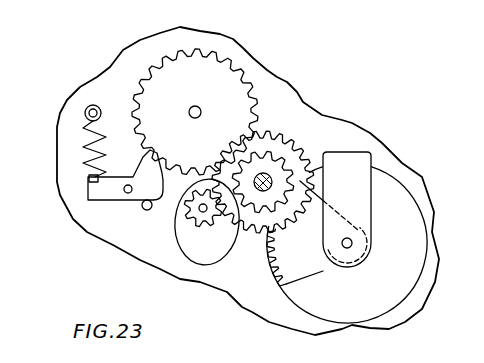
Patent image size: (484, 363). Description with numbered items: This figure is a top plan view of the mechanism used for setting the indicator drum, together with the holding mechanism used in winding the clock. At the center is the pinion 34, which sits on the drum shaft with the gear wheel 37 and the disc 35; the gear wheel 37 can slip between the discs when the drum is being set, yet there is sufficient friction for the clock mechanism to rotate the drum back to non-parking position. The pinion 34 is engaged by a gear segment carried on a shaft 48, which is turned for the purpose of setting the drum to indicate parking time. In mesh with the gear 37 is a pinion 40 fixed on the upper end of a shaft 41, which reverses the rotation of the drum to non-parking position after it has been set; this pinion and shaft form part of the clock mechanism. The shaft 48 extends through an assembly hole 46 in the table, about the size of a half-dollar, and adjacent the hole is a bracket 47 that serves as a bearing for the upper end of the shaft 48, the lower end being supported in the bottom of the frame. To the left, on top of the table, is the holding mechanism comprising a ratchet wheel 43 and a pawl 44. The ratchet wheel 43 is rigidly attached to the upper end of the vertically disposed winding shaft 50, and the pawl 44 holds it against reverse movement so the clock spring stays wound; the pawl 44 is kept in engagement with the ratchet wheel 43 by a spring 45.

The pinion 34 is at (273, 167).
The disc 35 is at (317, 233).
The gear wheel 37 is at (277, 136).
The pinion 40 is at (205, 228).
The shaft 41 is at (197, 210).
The ratchet wheel 43 is at (217, 85).
The pawl 44 is at (123, 195).
The spring 45 is at (88, 144).
The assembly hole 46 is at (347, 245).
The bracket 47 is at (349, 167).
The shaft 48 is at (352, 243).
The winding shaft 50 is at (191, 106).